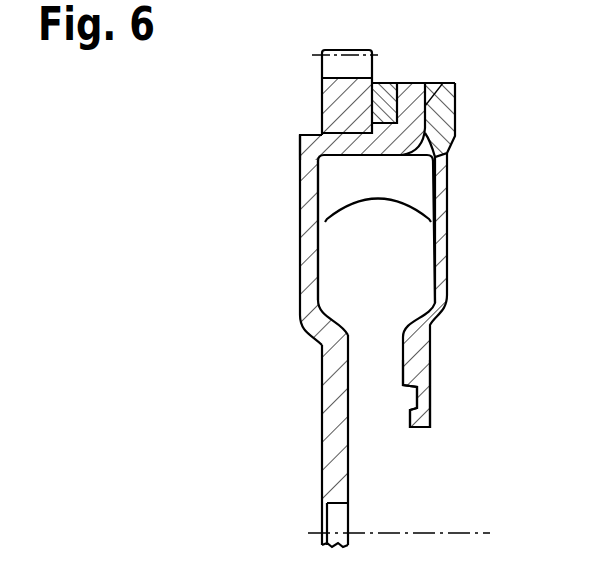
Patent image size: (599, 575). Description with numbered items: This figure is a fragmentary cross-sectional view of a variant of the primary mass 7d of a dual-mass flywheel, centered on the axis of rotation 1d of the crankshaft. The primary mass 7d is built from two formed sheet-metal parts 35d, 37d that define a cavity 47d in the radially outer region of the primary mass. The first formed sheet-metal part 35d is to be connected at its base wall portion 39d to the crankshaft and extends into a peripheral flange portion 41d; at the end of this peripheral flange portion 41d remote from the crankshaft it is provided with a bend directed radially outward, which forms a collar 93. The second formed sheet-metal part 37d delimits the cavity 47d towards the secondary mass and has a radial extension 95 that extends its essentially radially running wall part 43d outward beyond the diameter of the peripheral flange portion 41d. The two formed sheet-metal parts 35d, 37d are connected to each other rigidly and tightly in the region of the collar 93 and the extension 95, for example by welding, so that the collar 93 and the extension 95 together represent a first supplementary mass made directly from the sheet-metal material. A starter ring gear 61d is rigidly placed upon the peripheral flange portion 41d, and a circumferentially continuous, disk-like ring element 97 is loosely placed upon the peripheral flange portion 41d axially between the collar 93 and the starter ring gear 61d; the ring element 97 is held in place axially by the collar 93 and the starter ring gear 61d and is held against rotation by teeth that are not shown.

The starter ring gear 61d is at (316, 102).
The ring element 97 is at (389, 97).
The collar 93 is at (410, 110).
The radial extension 95 is at (447, 113).
The peripheral flange portion 41d is at (347, 145).
The cavity 47d is at (355, 257).
The formed sheet-metal part 37d is at (452, 275).
The wall part 43d is at (410, 357).
The formed sheet-metal part 35d is at (297, 326).
The base wall portion 39d is at (333, 441).
The primary mass 7d is at (295, 493).
The axis of rotation 1d is at (462, 533).